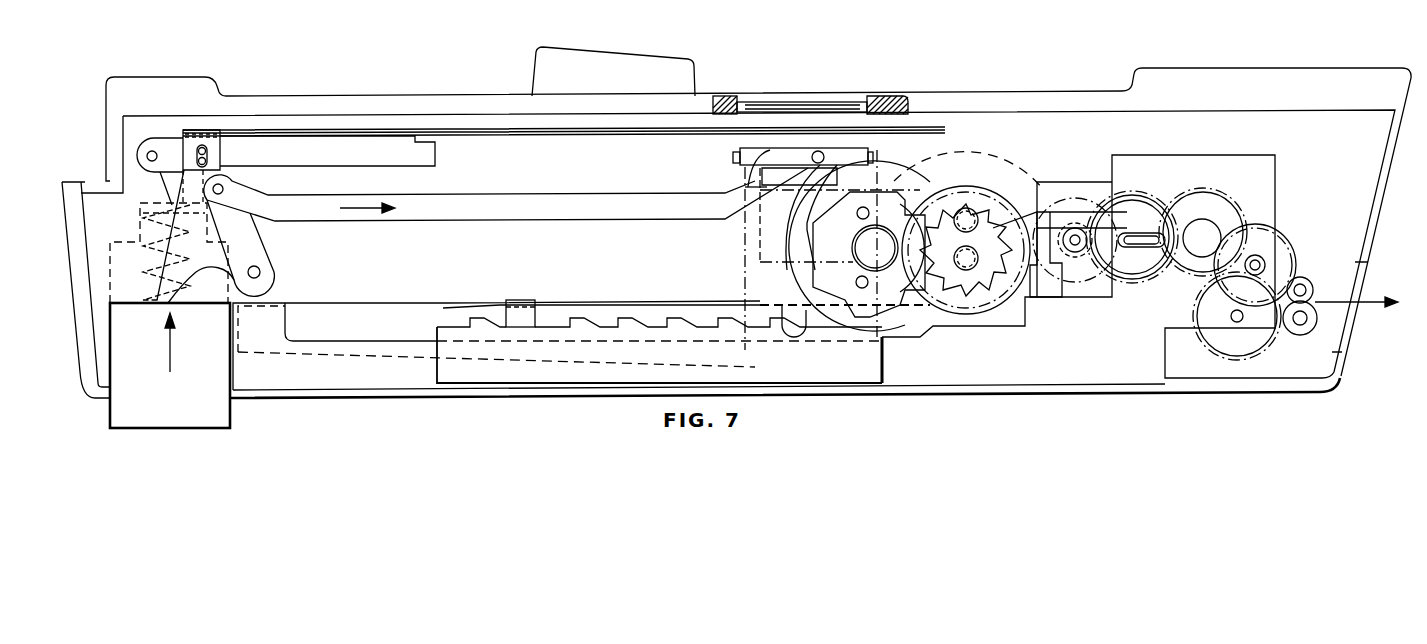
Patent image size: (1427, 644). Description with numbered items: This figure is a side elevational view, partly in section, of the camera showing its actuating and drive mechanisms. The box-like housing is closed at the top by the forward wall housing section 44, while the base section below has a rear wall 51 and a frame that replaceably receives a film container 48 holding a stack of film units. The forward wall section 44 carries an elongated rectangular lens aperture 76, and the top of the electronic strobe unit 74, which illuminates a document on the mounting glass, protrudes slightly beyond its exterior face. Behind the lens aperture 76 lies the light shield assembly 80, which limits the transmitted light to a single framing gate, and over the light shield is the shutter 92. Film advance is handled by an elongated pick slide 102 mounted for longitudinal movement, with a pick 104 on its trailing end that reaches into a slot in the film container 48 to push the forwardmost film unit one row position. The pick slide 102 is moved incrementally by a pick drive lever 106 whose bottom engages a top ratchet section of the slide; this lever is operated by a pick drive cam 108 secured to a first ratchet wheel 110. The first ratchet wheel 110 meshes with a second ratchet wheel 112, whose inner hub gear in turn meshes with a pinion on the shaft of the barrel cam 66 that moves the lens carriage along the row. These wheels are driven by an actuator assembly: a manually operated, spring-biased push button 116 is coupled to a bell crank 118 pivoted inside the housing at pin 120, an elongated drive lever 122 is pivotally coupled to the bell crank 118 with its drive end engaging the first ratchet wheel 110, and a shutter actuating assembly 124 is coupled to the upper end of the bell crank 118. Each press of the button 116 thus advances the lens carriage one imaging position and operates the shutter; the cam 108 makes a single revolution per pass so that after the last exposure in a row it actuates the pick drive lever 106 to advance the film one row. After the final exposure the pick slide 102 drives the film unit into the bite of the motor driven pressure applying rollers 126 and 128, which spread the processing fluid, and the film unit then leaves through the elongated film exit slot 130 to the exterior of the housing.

The forward wall housing section 44 is at (938, 103).
The film container 48 is at (262, 343).
The rear wall 51 is at (880, 385).
The barrel cam 66 is at (990, 153).
The electronic strobe unit 74 is at (612, 55).
The lens aperture 76 is at (847, 98).
The light shield assembly 80 is at (732, 155).
The shutter 92 is at (598, 128).
The pick slide 102 is at (549, 366).
The pick 104 is at (448, 305).
The pick drive lever 106 is at (775, 222).
The pick drive cam 108 is at (885, 172).
The first ratchet wheel 110 is at (887, 297).
The second ratchet wheel 112 is at (967, 293).
The push button 116 is at (128, 410).
The bell crank 118 is at (250, 246).
The pin 120 is at (262, 271).
The drive lever 122 is at (495, 210).
The shutter actuating assembly 124 is at (438, 163).
The pressure applying roller 126 is at (1303, 280).
The pressure applying roller 128 is at (1295, 330).
The film exit slot 130 is at (1342, 340).